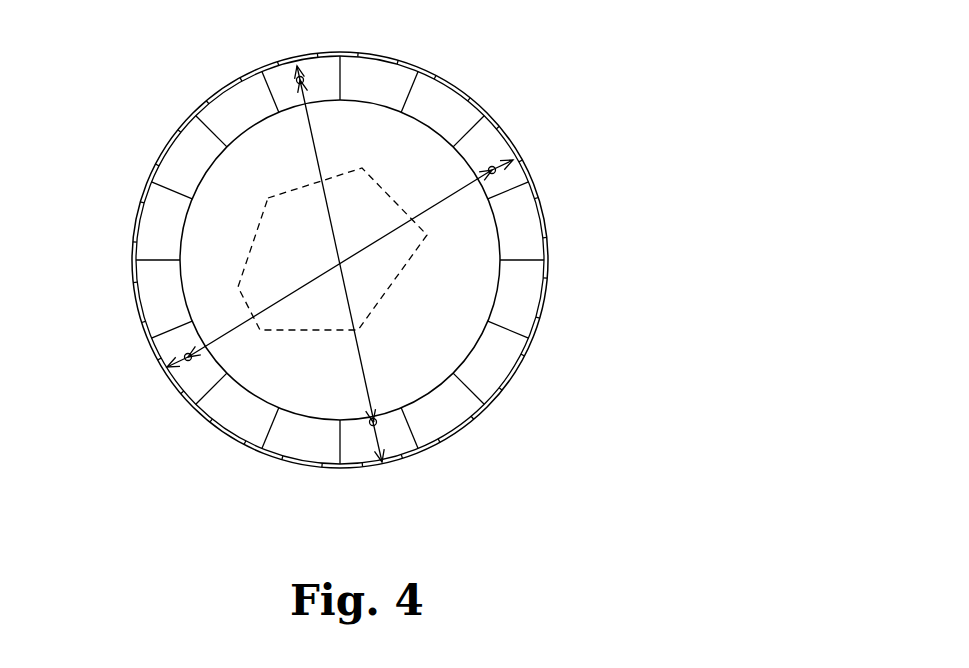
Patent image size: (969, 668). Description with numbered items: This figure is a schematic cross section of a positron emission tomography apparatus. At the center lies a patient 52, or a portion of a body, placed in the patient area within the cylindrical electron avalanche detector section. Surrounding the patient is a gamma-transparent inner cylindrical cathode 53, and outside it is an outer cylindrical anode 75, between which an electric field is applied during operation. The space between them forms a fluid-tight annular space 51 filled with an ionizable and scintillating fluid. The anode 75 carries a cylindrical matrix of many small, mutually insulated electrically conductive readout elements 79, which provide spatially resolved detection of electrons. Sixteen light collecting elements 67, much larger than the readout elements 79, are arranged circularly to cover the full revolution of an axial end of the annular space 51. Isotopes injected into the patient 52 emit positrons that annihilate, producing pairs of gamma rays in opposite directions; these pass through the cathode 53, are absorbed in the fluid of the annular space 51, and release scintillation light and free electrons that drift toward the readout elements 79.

The annular space 51 is at (525, 292).
The patient 52 is at (391, 248).
The inner cylindrical cathode 53 is at (440, 82).
The light collecting elements 67 is at (200, 380).
The outer cylindrical anode 75 is at (473, 103).
The readout elements 79 is at (163, 368).